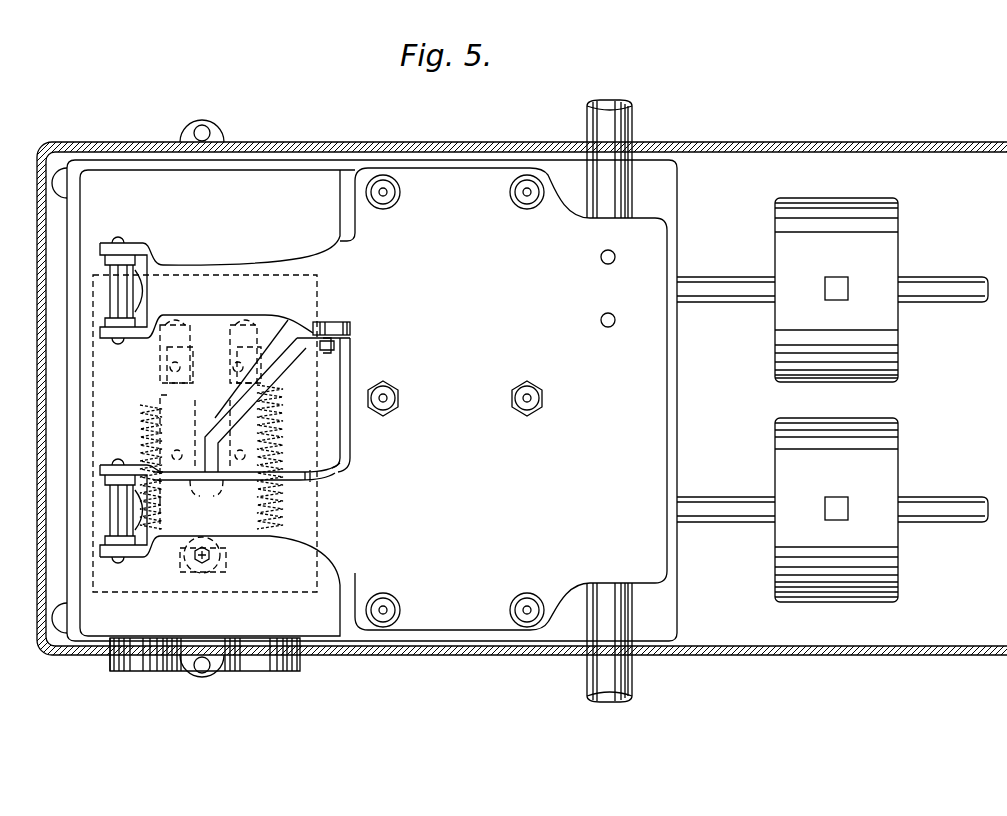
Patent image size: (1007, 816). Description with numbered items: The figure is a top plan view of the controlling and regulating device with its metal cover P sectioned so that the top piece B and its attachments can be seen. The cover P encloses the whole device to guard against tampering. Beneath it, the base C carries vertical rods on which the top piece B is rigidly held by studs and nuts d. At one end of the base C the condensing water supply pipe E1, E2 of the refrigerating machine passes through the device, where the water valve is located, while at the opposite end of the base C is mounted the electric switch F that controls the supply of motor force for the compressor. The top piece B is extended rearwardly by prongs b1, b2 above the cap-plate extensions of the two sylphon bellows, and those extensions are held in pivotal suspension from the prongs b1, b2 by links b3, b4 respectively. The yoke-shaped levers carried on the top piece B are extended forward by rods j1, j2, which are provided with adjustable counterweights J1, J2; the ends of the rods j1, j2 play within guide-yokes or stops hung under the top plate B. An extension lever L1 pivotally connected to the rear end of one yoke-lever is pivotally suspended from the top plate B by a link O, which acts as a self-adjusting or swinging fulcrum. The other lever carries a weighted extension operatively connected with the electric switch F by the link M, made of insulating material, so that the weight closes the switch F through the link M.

The metal cover P is at (690, 145).
The base C is at (217, 403).
The top piece B is at (503, 399).
The studs and nuts d is at (527, 593).
The condensing water supply pipe E1 is at (609, 159).
The condensing water supply pipe E2 is at (609, 642).
The adjustable counterweight J1 is at (836, 510).
The adjustable counterweight J2 is at (836, 290).
The rod j1 is at (728, 500).
The rod j2 is at (722, 298).
The prong b1 is at (246, 489).
The prong b2 is at (238, 302).
The link b3 is at (110, 533).
The link b4 is at (103, 308).
The electric switch F is at (178, 425).
The lever L1 is at (277, 396).
The link O is at (322, 346).
The link M is at (197, 557).